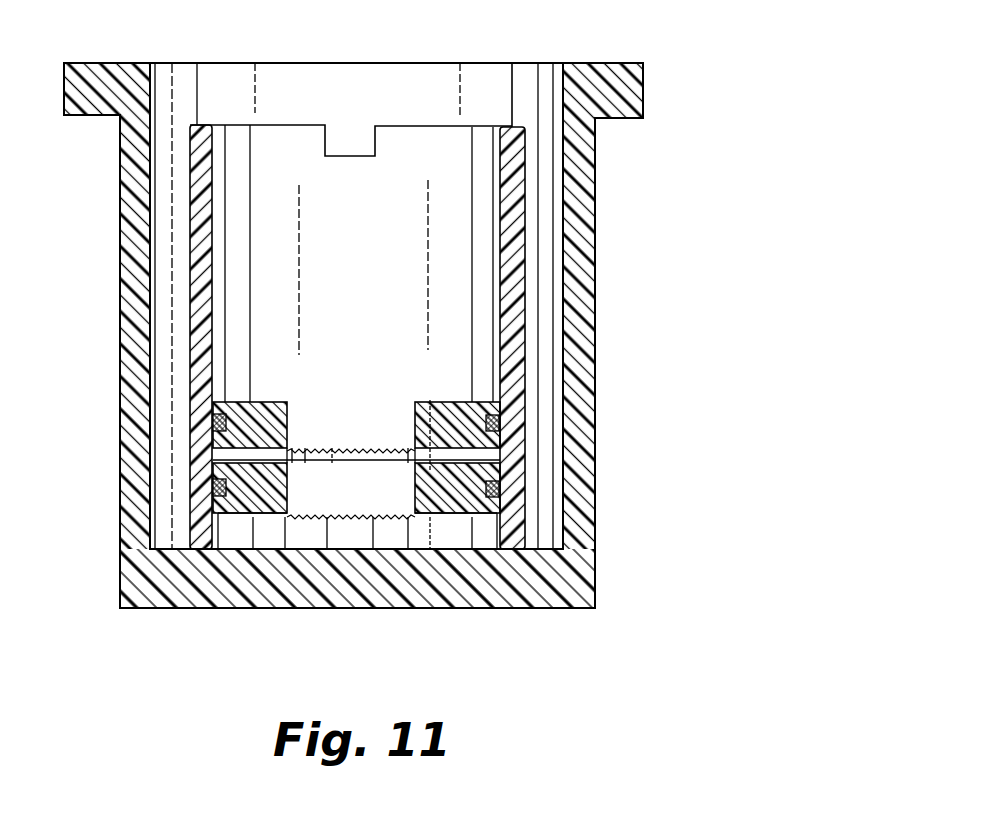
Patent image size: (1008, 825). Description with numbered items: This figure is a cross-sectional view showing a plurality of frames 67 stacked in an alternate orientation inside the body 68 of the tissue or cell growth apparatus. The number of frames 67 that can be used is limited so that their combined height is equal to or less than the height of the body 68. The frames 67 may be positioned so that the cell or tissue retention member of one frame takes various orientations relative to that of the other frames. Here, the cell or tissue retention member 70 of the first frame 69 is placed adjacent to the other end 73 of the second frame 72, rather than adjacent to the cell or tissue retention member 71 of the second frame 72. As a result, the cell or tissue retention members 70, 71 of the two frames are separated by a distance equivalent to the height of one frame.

The frames 67 is at (512, 434).
The body 68 is at (535, 257).
The first frame 69 is at (283, 396).
The cell or tissue retention member 70 is at (366, 455).
The cell or tissue retention member 71 is at (397, 518).
The second frame 72 is at (266, 520).
The other end 73 is at (365, 463).